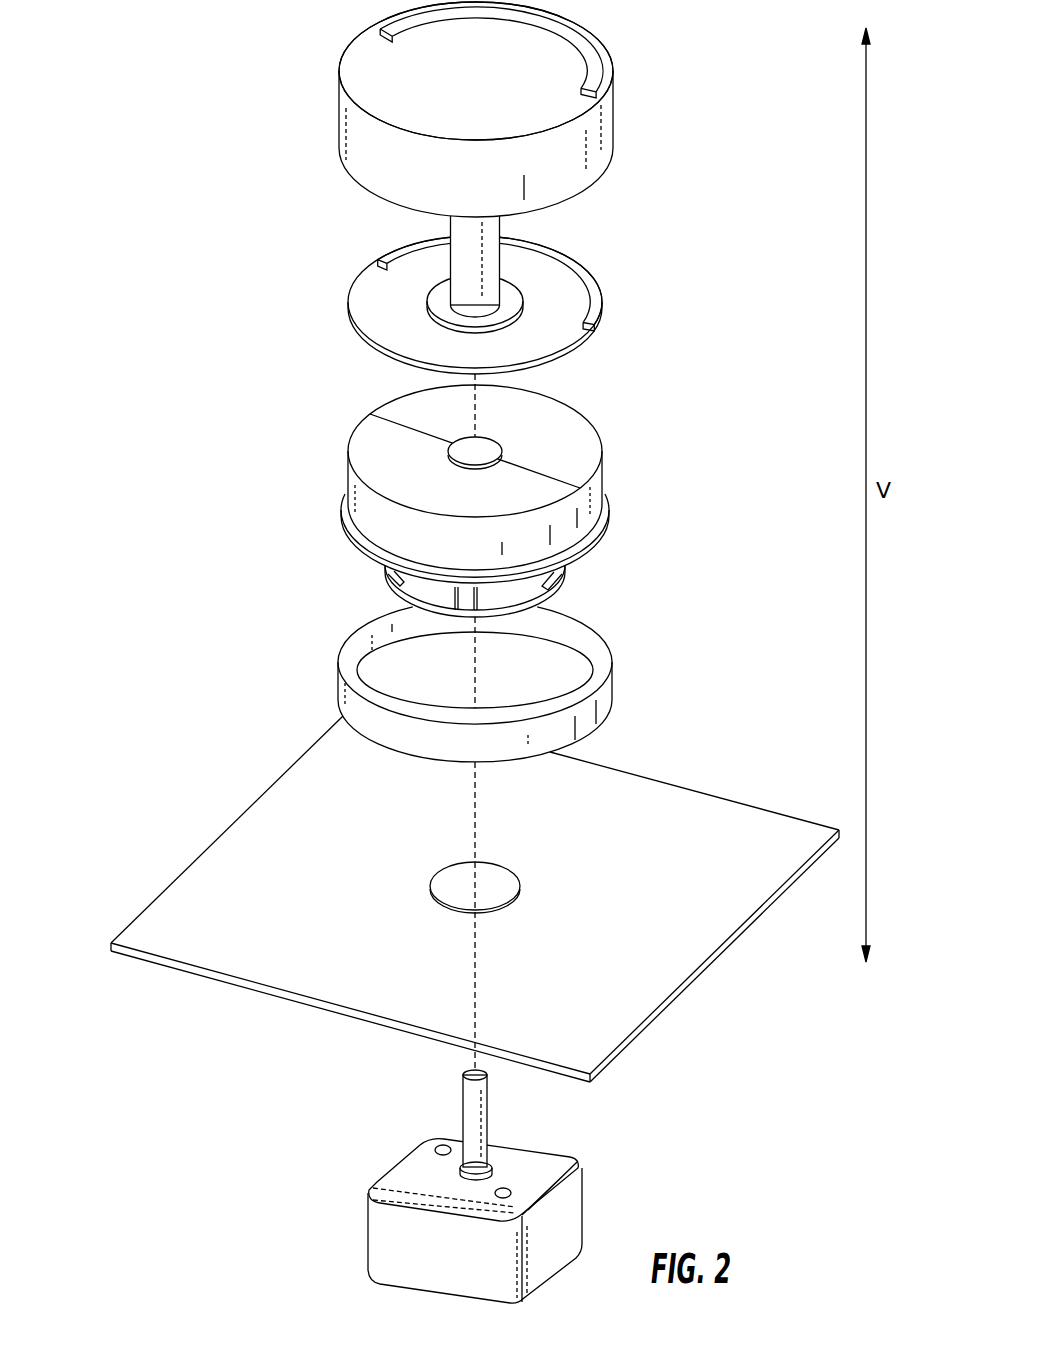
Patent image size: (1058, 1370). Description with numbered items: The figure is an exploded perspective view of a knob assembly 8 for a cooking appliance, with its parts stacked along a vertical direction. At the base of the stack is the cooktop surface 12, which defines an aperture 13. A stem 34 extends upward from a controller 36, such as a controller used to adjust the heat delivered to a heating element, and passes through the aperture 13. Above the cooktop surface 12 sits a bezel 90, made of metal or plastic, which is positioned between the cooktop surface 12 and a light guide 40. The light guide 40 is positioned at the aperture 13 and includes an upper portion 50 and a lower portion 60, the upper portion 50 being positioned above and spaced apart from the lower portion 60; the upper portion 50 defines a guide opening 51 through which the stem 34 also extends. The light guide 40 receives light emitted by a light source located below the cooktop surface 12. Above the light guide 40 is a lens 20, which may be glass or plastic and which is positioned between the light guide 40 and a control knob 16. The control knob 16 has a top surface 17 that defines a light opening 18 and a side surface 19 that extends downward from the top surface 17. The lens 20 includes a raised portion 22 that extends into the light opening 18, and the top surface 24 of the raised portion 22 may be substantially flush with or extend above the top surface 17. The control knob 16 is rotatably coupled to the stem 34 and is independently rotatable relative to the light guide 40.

The knob assembly 8 is at (144, 1126).
The cooktop surface 12 is at (632, 950).
The aperture 13 is at (452, 886).
The control knob 16 is at (458, 108).
The top surface 17 is at (519, 120).
The light opening 18 is at (590, 52).
The side surface 19 is at (451, 190).
The lens 20 is at (348, 312).
The raised portion 22 is at (603, 298).
The top surface of raised portion 24 is at (579, 268).
The stem 34 is at (492, 251).
The controller 36 is at (451, 1267).
The light guide 40 is at (618, 509).
The upper portion 50 is at (348, 473).
The guide opening 51 is at (488, 437).
The lower portion 60 is at (552, 587).
The bezel 90 is at (337, 660).